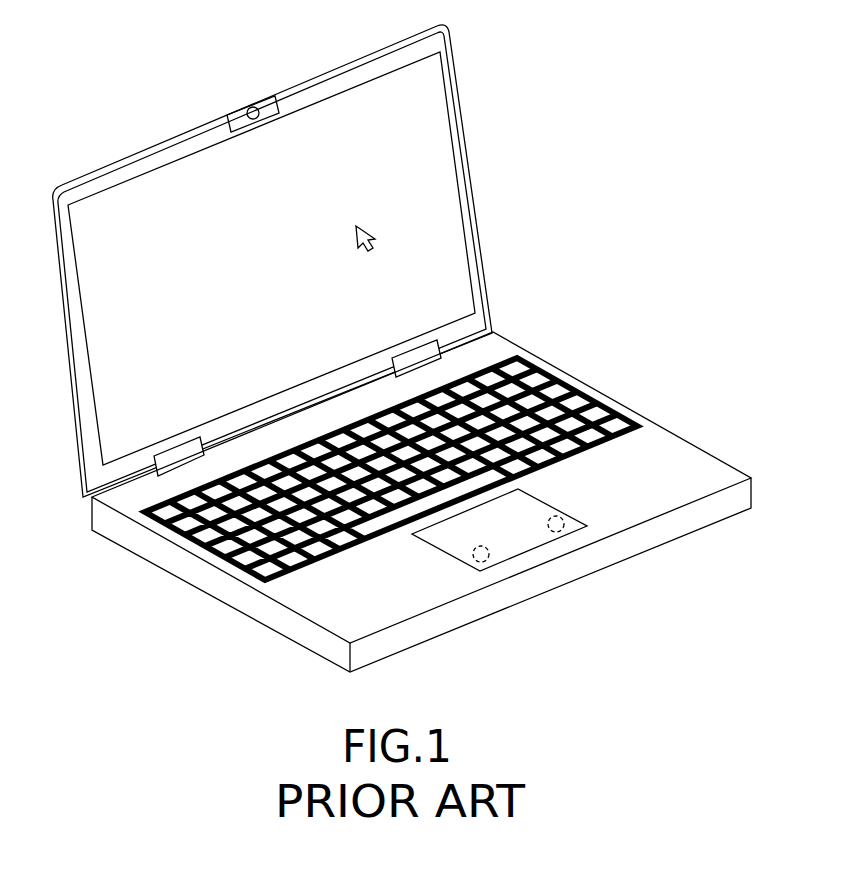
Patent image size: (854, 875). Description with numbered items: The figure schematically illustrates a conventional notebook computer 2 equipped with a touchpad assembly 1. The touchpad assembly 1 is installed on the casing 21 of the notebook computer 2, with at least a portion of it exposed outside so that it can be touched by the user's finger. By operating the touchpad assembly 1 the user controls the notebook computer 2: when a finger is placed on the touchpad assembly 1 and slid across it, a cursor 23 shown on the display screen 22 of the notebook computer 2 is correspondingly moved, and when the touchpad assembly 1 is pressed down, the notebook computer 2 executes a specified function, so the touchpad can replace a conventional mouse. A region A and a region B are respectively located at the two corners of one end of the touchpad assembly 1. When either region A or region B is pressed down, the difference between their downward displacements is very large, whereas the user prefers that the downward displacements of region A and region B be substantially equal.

The touchpad assembly 1 is at (455, 535).
The notebook computer 2 is at (528, 176).
The casing 21 is at (667, 451).
The display screen 22 is at (432, 132).
The cursor 23 is at (362, 228).
The region A is at (493, 552).
The region B is at (561, 517).